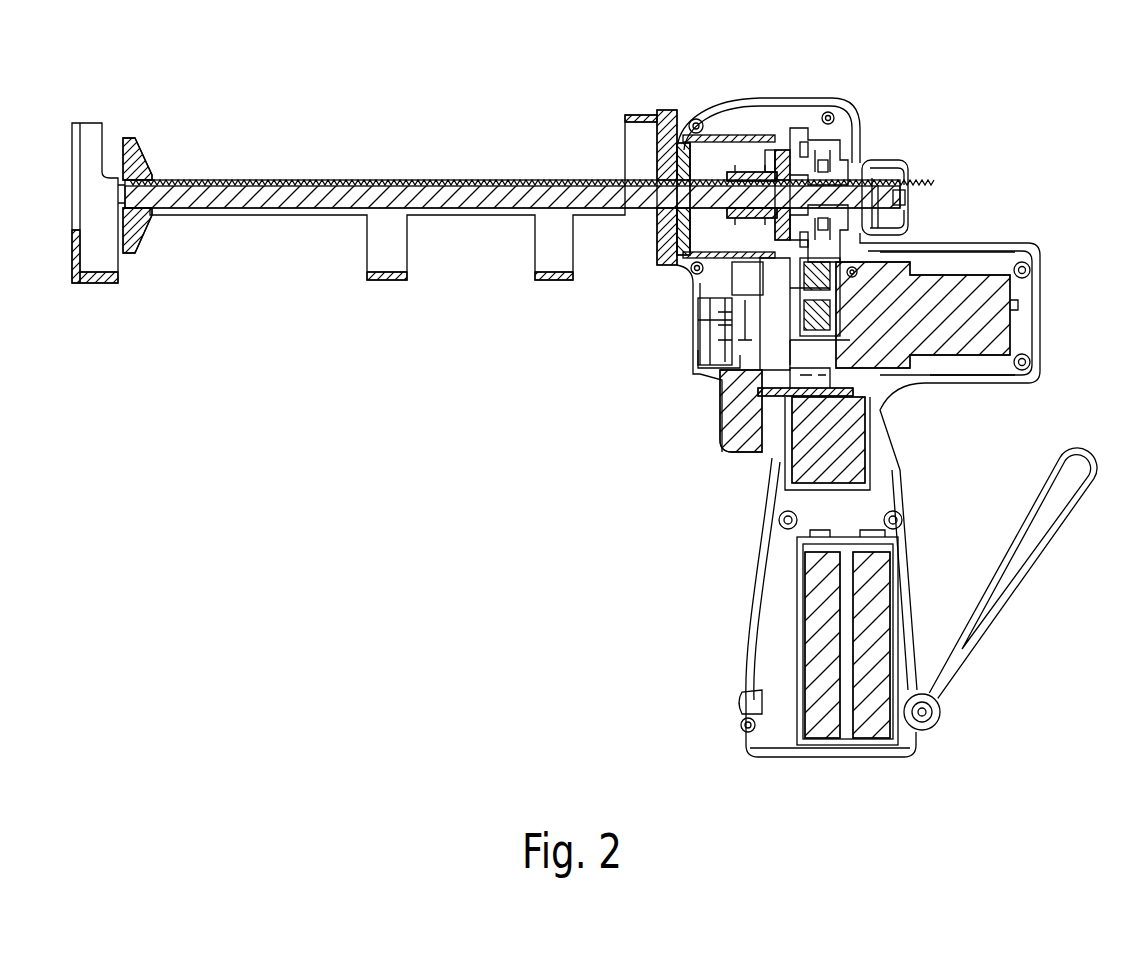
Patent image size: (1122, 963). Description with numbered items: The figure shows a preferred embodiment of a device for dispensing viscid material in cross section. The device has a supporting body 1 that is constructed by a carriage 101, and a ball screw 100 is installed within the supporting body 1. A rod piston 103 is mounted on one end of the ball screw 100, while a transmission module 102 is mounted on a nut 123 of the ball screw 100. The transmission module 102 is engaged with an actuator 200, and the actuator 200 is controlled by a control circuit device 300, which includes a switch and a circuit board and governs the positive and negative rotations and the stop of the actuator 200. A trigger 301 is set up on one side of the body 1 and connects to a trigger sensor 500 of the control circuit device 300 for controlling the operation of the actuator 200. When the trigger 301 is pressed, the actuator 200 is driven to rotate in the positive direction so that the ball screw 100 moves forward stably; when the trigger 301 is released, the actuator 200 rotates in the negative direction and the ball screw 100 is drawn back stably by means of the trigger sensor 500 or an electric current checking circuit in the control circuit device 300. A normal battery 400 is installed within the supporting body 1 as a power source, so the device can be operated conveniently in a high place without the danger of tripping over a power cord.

The supporting body 1 is at (877, 378).
The ball screw 100 is at (353, 187).
The carriage 101 is at (551, 282).
The transmission module 102 is at (803, 160).
The rod piston 103 is at (137, 157).
The nut 123 is at (740, 165).
The actuator 200 is at (963, 300).
The control circuit device 300 is at (737, 308).
The trigger 301 is at (735, 435).
The battery 400 is at (823, 655).
The trigger sensor 500 is at (807, 385).